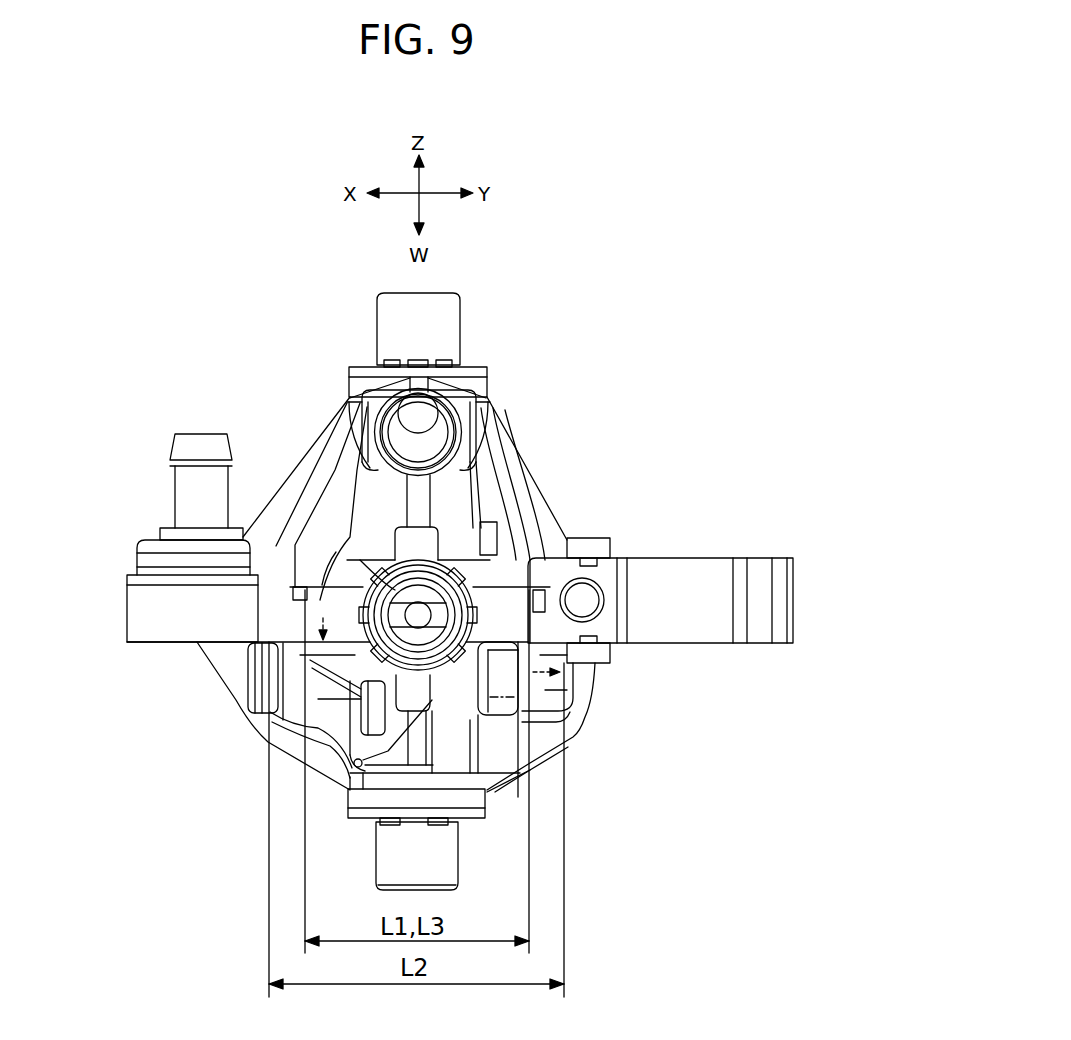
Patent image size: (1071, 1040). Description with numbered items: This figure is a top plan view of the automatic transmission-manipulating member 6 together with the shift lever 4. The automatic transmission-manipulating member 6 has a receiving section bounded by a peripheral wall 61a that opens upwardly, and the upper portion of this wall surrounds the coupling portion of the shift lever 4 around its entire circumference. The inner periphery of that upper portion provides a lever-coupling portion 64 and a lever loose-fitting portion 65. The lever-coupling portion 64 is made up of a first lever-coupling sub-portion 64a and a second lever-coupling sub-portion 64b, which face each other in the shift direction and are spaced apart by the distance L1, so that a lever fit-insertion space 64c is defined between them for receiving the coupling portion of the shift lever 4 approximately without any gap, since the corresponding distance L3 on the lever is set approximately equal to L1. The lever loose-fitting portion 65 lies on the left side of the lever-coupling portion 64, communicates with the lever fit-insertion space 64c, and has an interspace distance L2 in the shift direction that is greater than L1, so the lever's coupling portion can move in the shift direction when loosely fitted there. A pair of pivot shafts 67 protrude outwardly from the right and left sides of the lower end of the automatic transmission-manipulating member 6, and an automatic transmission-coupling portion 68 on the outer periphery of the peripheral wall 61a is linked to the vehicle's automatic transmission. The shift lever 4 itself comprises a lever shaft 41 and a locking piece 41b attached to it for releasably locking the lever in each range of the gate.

The shift lever 4 is at (543, 655).
The automatic transmission-manipulating member 6 is at (584, 516).
The lever shaft 41 is at (525, 620).
The locking piece 41b is at (500, 782).
The peripheral wall 61a is at (560, 688).
The lever-coupling portion 64 is at (666, 375).
The first lever-coupling sub-portion 64a is at (415, 555).
The second lever-coupling sub-portion 64b is at (518, 562).
The lever fit-insertion space 64c is at (492, 572).
The lever loose-fitting portion 65 is at (555, 658).
The pivot shafts 67 is at (455, 306).
The automatic transmission-coupling portion 68 is at (178, 488).